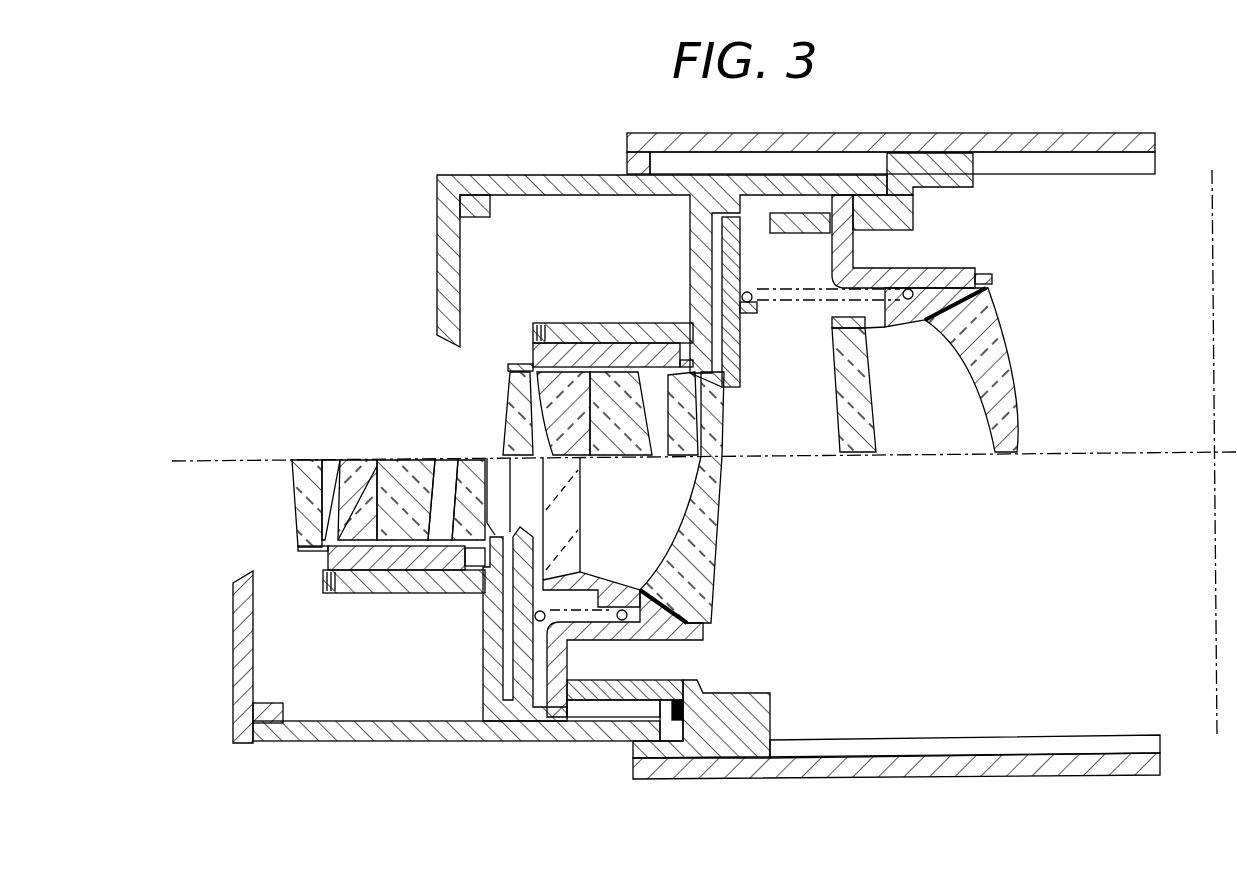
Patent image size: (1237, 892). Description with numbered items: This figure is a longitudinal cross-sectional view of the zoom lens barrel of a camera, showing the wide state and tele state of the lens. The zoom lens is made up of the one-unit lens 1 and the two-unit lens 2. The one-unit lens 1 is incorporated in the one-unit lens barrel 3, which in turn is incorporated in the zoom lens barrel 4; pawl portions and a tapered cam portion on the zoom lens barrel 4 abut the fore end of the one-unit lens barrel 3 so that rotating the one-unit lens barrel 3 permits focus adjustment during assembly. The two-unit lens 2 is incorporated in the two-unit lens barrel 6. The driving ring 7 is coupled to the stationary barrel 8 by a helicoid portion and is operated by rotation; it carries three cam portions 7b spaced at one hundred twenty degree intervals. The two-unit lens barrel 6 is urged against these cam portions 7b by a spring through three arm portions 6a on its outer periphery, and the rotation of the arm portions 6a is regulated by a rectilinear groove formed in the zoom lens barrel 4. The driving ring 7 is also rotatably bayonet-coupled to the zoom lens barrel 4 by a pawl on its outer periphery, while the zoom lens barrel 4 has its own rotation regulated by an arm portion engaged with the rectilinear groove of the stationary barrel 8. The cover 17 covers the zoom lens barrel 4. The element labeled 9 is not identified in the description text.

The one-unit lens 1 is at (483, 425).
The two-unit lens 2 is at (845, 468).
The one-unit lens barrel 3 is at (622, 353).
The zoom lens barrel 4 is at (483, 641).
The two-unit lens barrel 6 is at (958, 283).
The arm portions 6a is at (560, 660).
The driving ring 7 is at (748, 715).
The cam portions 7b is at (597, 690).
The stationary barrel 8 is at (997, 765).
The roller pin 9 is at (760, 300).
The cover 17 is at (253, 663).